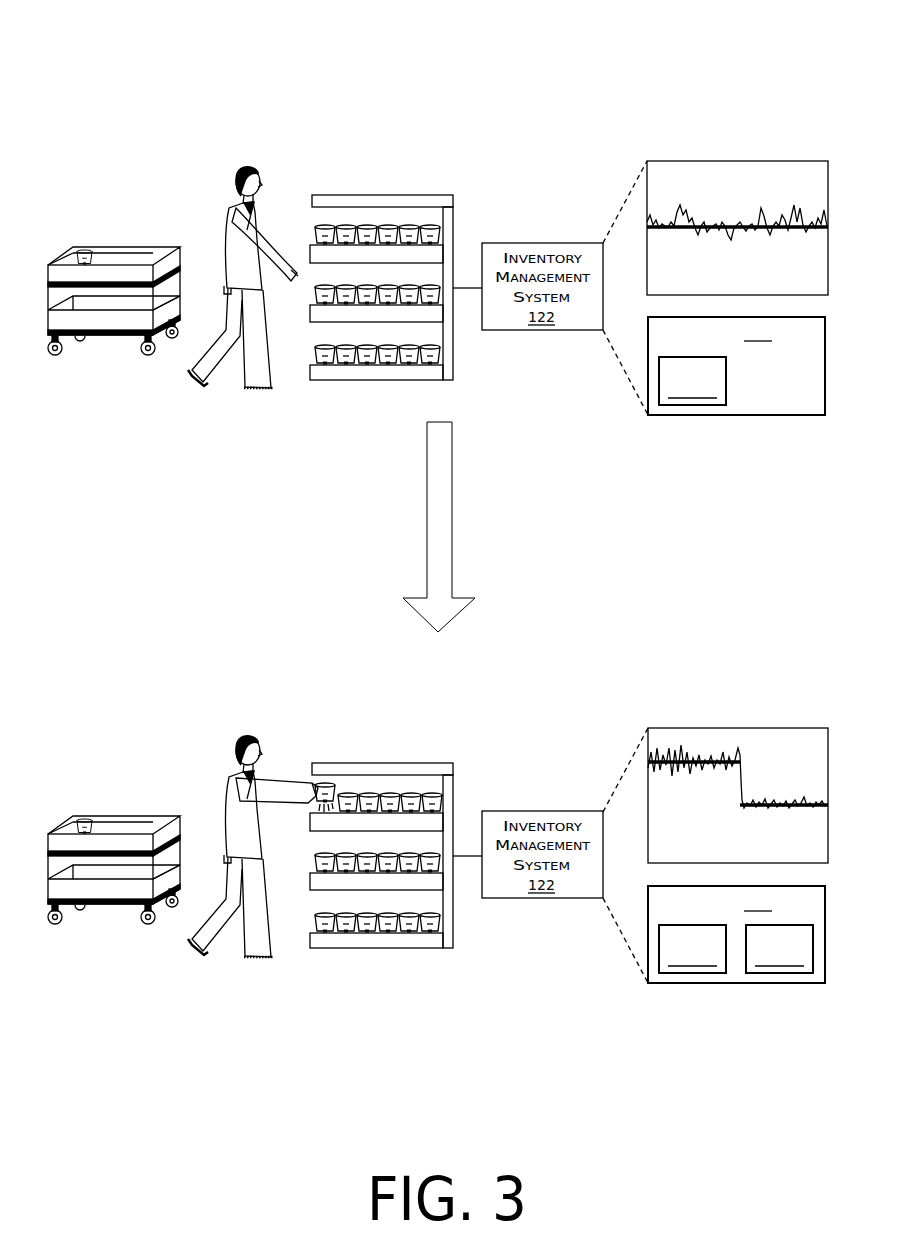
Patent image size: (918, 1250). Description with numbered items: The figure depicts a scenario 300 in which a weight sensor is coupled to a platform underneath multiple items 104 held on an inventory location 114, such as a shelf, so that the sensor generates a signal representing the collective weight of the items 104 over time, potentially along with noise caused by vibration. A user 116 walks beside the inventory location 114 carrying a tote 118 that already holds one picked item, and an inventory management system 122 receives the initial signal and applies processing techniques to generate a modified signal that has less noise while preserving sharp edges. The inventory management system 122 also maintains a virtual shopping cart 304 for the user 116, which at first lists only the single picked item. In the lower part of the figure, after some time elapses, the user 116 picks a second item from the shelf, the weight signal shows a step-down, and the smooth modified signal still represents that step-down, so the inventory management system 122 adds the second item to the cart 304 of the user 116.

The scenario 300 is at (107, 40).
The user 116 is at (242, 737).
The tote 118 is at (120, 954).
The inventory location 114 is at (385, 749).
The items 104 is at (425, 218).
The inventory management system 122 is at (528, 570).
The virtual shopping cart 304 is at (736, 650).